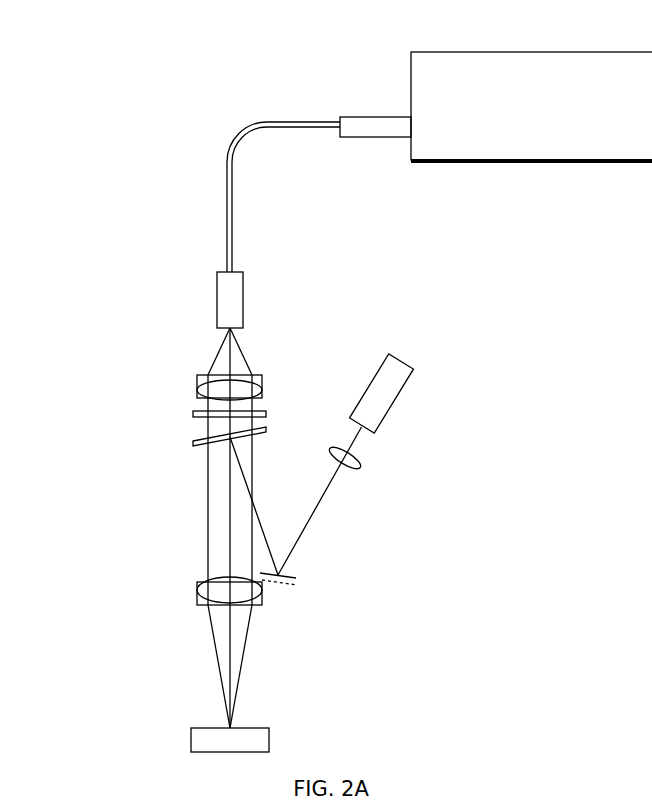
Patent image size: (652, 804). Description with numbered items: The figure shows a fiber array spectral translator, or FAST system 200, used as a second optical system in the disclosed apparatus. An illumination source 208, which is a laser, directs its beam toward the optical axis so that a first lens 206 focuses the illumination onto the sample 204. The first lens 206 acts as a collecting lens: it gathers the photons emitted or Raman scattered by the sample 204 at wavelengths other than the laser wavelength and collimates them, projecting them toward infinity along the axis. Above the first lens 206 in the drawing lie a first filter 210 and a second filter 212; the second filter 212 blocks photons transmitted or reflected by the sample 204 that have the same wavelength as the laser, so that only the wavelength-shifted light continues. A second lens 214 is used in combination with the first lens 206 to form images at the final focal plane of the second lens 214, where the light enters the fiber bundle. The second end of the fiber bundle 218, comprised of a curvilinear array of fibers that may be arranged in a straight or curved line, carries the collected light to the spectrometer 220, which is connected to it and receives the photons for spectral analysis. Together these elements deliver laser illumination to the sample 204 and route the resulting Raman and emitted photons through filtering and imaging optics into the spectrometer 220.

The FAST system 200 is at (53, 66).
The sample 204 is at (269, 738).
The first lens 206 is at (197, 599).
The illumination source 208 is at (392, 409).
The first filter 210 is at (193, 443).
The second filter 212 is at (193, 414).
The second lens 214 is at (197, 385).
The second end of the fiber bundle 218 is at (228, 158).
The spectrometer 220 is at (556, 121).